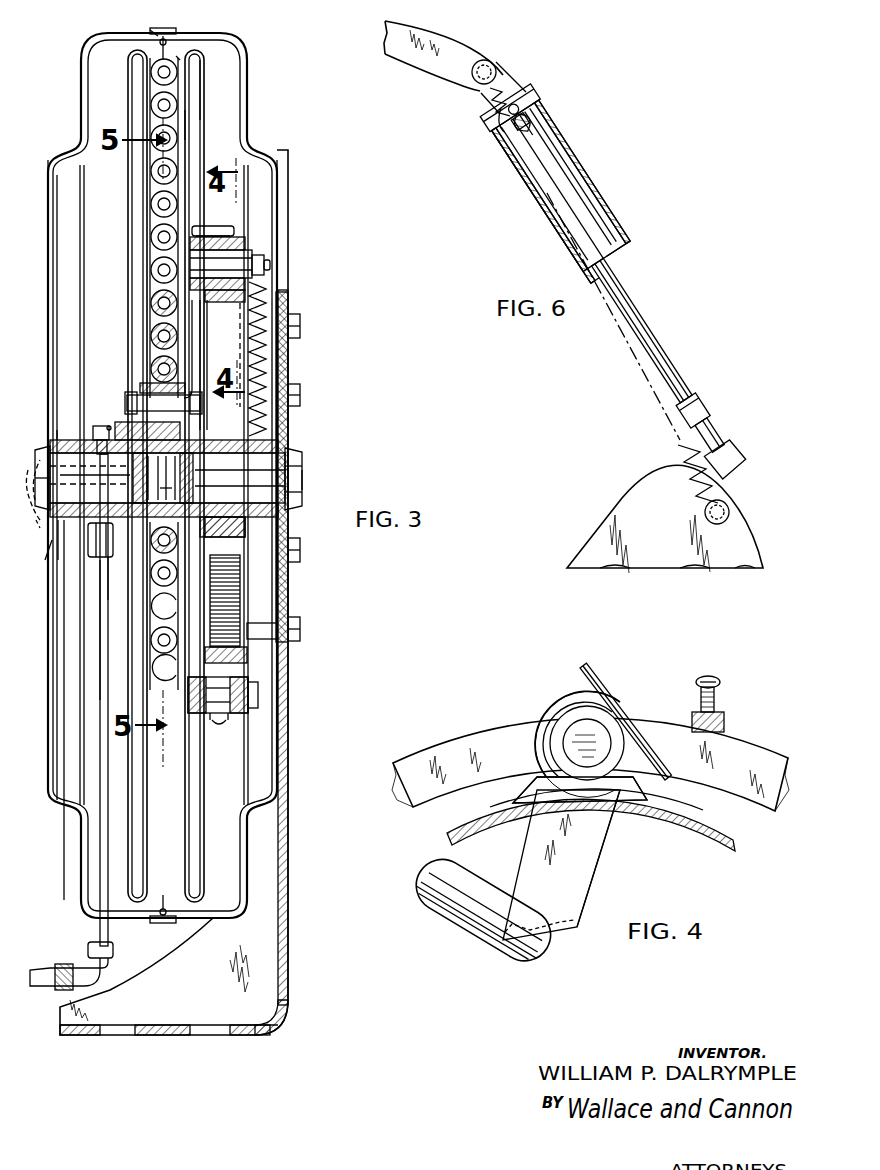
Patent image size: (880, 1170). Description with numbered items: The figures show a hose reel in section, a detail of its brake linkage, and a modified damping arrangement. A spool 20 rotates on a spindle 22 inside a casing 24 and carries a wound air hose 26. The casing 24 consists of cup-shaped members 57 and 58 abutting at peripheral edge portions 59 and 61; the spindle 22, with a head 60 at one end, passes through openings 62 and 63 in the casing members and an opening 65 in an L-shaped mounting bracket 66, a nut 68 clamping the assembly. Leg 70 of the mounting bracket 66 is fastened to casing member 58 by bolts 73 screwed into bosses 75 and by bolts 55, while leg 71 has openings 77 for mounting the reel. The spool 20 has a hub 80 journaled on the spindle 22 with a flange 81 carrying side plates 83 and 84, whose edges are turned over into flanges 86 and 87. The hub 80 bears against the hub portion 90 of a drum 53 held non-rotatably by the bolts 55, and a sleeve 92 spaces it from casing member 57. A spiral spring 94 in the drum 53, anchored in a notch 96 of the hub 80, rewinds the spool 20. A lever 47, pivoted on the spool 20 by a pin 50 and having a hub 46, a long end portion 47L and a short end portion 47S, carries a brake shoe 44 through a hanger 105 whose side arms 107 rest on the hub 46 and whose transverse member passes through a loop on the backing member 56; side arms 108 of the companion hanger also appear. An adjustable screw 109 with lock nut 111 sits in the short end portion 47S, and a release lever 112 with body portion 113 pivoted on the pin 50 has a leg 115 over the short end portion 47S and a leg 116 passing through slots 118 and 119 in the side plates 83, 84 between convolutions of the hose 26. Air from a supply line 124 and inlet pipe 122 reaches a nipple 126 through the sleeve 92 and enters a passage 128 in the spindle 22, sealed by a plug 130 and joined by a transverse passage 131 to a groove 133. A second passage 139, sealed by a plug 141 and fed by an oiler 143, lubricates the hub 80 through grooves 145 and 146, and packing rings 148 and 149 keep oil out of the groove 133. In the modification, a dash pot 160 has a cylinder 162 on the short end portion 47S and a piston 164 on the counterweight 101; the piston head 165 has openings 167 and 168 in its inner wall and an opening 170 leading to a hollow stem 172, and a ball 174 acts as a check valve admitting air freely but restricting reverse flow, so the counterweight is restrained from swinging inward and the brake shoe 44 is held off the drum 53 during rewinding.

In FIG. 3, the spool 20 is at (210, 82).
In FIG. 3, the spindle 22 is at (258, 468).
In FIG. 3, the casing 24 is at (252, 100).
In FIG. 3, the air hose 26 is at (178, 58).
In FIG. 4, the brake shoe 44 is at (742, 851).
In FIG. 4, the hub 46 is at (597, 708).
In FIG. 6, the lever 47 is at (404, 44).
In FIG. 4, the lever 47 is at (591, 753).
In FIG. 4, the long end portion 47L is at (482, 742).
In FIG. 6, the short end portion 47S is at (460, 53).
In FIG. 4, the short end portion 47S is at (745, 760).
In FIG. 3, the pin 50 is at (255, 258).
In FIG. 4, the pin 50 is at (598, 768).
In FIG. 3, the drum 53 is at (264, 298).
In FIG. 3, the bolts 55 is at (300, 325).
In FIG. 4, the bolts 55 is at (515, 795).
In FIG. 4, the backing member 56 is at (718, 828).
In FIG. 3, the cup-shaped casing member 57 is at (76, 150).
In FIG. 3, the cup-shaped casing member 58 is at (252, 148).
In FIG. 3, the peripheral edge portion 59 is at (156, 36).
In FIG. 3, the head 60 is at (48, 446).
In FIG. 3, the peripheral edge portion 61 is at (166, 42).
In FIG. 3, the opening 62 is at (62, 440).
In FIG. 3, the opening 63 is at (305, 487).
In FIG. 3, the opening 65 is at (284, 457).
In FIG. 3, the mounting bracket 66 is at (256, 454).
In FIG. 3, the nut 68 is at (304, 468).
In FIG. 3, the leg 70 is at (189, 606).
In FIG. 3, the leg 71 is at (175, 1036).
In FIG. 3, the bolts 73 is at (292, 395).
In FIG. 3, the bosses 75 is at (284, 380).
In FIG. 3, the openings 77 is at (118, 1036).
In FIG. 3, the hub 80 is at (132, 420).
In FIG. 3, the flange 81 is at (143, 388).
In FIG. 3, the side plate 83 is at (150, 198).
In FIG. 3, the side plate 84 is at (186, 130).
In FIG. 3, the flange 86 is at (128, 70).
In FIG. 3, the flange 87 is at (204, 62).
In FIG. 3, the hub portion 90 is at (288, 514).
In FIG. 3, the sleeve 92 is at (92, 527).
In FIG. 3, the spiral spring 94 is at (232, 603).
In FIG. 3, the notch 96 is at (216, 530).
In FIG. 6, the counterweight 101 is at (668, 492).
In FIG. 4, the hanger 105 is at (537, 707).
In FIG. 3, the side arms 107 is at (244, 236).
In FIG. 4, the side arms 107 is at (557, 686).
In FIG. 3, the side arms 108 is at (219, 728).
In FIG. 4, the screw 109 is at (716, 681).
In FIG. 4, the lock nut 111 is at (726, 724).
In FIG. 3, the release lever 112 is at (224, 230).
In FIG. 4, the release lever 112 is at (590, 861).
In FIG. 3, the central body portion 113 is at (192, 330).
In FIG. 4, the central body portion 113 is at (582, 880).
In FIG. 3, the leg 115 is at (212, 226).
In FIG. 4, the leg 115 is at (640, 704).
In FIG. 3, the leg 116 is at (142, 356).
In FIG. 4, the leg 116 is at (516, 962).
In FIG. 3, the slot 118 is at (150, 326).
In FIG. 3, the slot 119 is at (186, 343).
In FIG. 4, the slot 119 is at (458, 926).
In FIG. 3, the air inlet pipe 122 is at (68, 733).
In FIG. 3, the supply line 124 is at (46, 984).
In FIG. 3, the nipple 126 is at (112, 570).
In FIG. 3, the passage 128 is at (45, 560).
In FIG. 3, the plug 130 is at (38, 506).
In FIG. 3, the transverse passage 131 is at (186, 486).
In FIG. 3, the groove 133 is at (167, 620).
In FIG. 3, the passage 139 is at (60, 520).
In FIG. 3, the plug 141 is at (30, 465).
In FIG. 3, the oiler 143 is at (103, 426).
In FIG. 3, the groove 145 is at (130, 468).
In FIG. 3, the groove 146 is at (195, 470).
In FIG. 3, the packing ring 148 is at (160, 488).
In FIG. 3, the packing ring 149 is at (164, 553).
In FIG. 6, the dash pot 160 is at (583, 153).
In FIG. 6, the cylinder 162 is at (588, 180).
In FIG. 6, the piston 164 is at (645, 298).
In FIG. 6, the head 165 is at (506, 146).
In FIG. 6, the opening 167 is at (512, 158).
In FIG. 6, the opening 168 is at (536, 122).
In FIG. 6, the opening 170 is at (530, 178).
In FIG. 6, the hollow stem 172 is at (668, 345).
In FIG. 6, the ball 174 is at (546, 143).